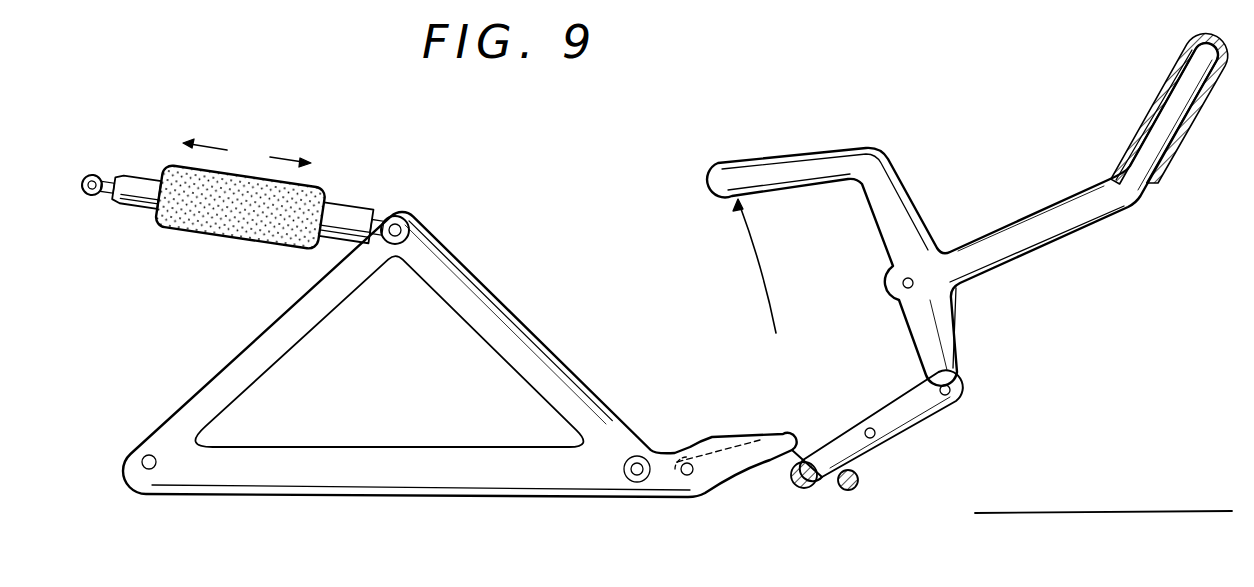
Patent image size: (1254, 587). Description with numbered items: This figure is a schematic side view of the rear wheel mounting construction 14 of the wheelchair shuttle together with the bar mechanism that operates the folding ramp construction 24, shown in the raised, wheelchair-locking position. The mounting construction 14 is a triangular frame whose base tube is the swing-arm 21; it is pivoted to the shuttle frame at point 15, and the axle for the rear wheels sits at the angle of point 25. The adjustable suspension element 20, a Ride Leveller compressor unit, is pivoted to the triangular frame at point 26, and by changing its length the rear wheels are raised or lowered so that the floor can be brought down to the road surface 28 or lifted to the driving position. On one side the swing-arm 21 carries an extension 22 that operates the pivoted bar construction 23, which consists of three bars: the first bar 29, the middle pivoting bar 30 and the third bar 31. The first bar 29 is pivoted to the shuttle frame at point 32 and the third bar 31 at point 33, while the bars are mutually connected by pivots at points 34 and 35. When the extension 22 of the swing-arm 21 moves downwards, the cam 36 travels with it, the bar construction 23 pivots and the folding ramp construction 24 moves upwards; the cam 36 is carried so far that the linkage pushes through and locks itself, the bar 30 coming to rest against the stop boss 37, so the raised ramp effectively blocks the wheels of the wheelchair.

The rear wheel mounting construction 14 is at (522, 317).
The pivot point 15 is at (147, 470).
The adjustable suspension element 20 is at (170, 162).
The swing-arm 21 is at (389, 488).
The extension 22 is at (738, 487).
The pivoted bar construction 23 is at (990, 313).
The folding ramp construction 24 is at (1126, 137).
The rear wheel axle point 25 is at (637, 483).
The suspension pivot point 26 is at (410, 232).
The road surface 28 is at (1115, 511).
The first bar 29 is at (843, 420).
The middle pivoting bar 30 is at (913, 430).
The third bar 31 is at (995, 232).
The pivot point of first bar 32 is at (686, 476).
The pivot point of third bar 33 is at (902, 283).
The pivot point 34 is at (875, 439).
The pivot point 35 is at (957, 393).
The cam 36 is at (804, 461).
The stop boss 37 is at (845, 491).